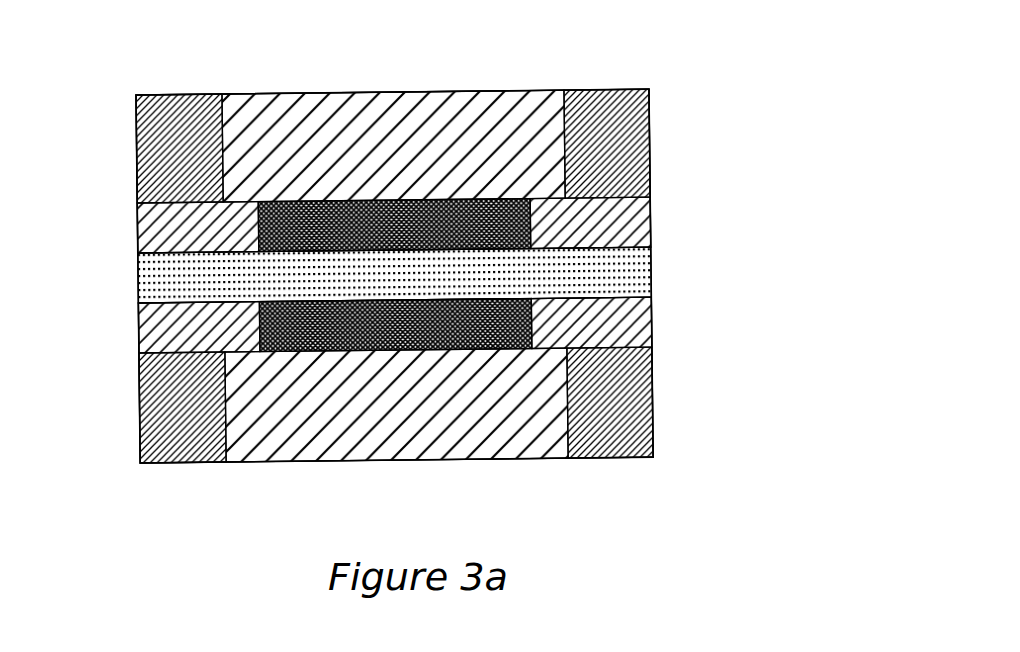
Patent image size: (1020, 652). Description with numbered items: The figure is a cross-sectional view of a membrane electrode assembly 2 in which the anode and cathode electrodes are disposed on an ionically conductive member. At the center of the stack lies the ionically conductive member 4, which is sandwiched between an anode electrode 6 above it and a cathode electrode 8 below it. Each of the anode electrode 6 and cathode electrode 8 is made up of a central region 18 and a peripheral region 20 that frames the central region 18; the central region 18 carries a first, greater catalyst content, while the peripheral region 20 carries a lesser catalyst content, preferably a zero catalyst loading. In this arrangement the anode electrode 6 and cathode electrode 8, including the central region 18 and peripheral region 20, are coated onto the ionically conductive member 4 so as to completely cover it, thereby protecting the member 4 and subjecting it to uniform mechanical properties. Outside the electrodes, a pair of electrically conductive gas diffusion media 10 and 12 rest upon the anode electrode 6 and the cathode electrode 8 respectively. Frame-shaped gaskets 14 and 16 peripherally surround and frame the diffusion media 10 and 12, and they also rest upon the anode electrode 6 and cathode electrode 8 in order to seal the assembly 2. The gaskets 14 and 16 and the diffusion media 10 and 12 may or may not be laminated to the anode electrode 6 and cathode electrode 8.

The membrane electrode assembly 2 is at (724, 100).
The ionically conductive member 4 is at (652, 268).
The anode electrode 6 is at (655, 216).
The cathode electrode 8 is at (655, 326).
The gas diffusion medium 10 is at (318, 117).
The gas diffusion medium 12 is at (425, 452).
The gasket 14 is at (172, 138).
The gasket 16 is at (142, 439).
The central region 18 is at (407, 222).
The peripheral region 20 is at (147, 243).